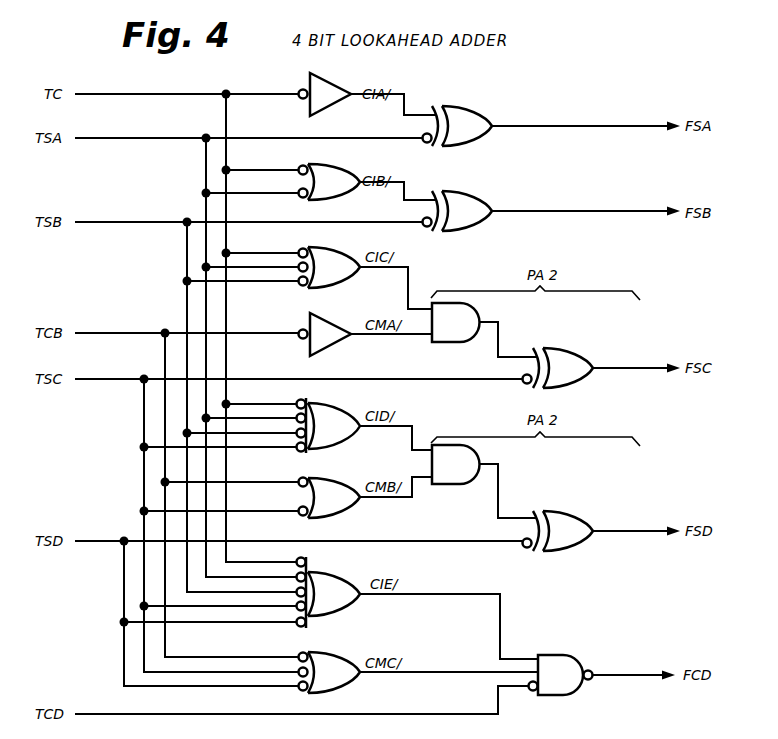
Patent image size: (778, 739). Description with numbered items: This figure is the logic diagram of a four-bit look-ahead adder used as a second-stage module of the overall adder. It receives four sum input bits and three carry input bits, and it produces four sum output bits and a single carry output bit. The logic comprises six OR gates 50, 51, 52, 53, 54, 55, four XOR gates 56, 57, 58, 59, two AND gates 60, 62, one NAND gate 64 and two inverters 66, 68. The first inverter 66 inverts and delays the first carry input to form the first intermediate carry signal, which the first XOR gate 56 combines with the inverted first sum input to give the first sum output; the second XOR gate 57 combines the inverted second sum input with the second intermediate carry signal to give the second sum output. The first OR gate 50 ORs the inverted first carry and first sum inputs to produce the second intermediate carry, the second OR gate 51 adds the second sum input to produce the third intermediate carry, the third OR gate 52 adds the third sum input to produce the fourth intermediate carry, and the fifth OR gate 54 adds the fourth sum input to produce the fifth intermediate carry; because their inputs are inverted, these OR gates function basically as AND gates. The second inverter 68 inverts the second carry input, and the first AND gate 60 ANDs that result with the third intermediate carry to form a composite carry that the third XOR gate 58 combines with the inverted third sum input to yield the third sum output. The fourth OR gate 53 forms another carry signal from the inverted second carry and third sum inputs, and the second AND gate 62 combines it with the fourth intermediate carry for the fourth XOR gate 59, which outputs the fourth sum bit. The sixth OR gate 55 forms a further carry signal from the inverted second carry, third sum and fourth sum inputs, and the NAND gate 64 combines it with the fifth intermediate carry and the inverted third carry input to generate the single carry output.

The OR gate 50 is at (330, 166).
The OR gate 51 is at (338, 250).
The OR gate 52 is at (332, 406).
The OR gate 53 is at (332, 478).
The OR gate 54 is at (336, 572).
The OR gate 55 is at (328, 652).
The XOR gate 56 is at (484, 108).
The XOR gate 57 is at (486, 196).
The XOR gate 58 is at (583, 351).
The XOR gate 59 is at (583, 514).
The AND gate 60 is at (443, 346).
The AND gate 62 is at (443, 488).
The NAND gate 64 is at (578, 657).
The inverter 66 is at (324, 77).
The inverter 68 is at (327, 316).